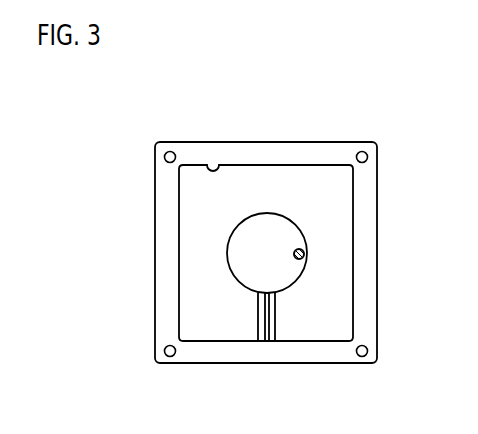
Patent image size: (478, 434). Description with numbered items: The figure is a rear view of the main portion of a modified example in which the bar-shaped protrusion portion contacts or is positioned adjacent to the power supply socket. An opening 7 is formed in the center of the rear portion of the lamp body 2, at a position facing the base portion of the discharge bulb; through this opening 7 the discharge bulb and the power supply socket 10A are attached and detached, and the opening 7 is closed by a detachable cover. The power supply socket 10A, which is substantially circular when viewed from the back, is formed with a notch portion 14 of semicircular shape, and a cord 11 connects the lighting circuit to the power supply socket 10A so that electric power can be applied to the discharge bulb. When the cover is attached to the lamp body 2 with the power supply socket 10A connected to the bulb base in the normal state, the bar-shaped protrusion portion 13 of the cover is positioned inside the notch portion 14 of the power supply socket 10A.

The lamp body 2 is at (296, 141).
The opening 7 is at (205, 167).
The power supply socket 10A is at (228, 255).
The cord 11 is at (257, 323).
The bar-shaped protrusion portion 13 is at (303, 255).
The notch portion 14 is at (302, 252).